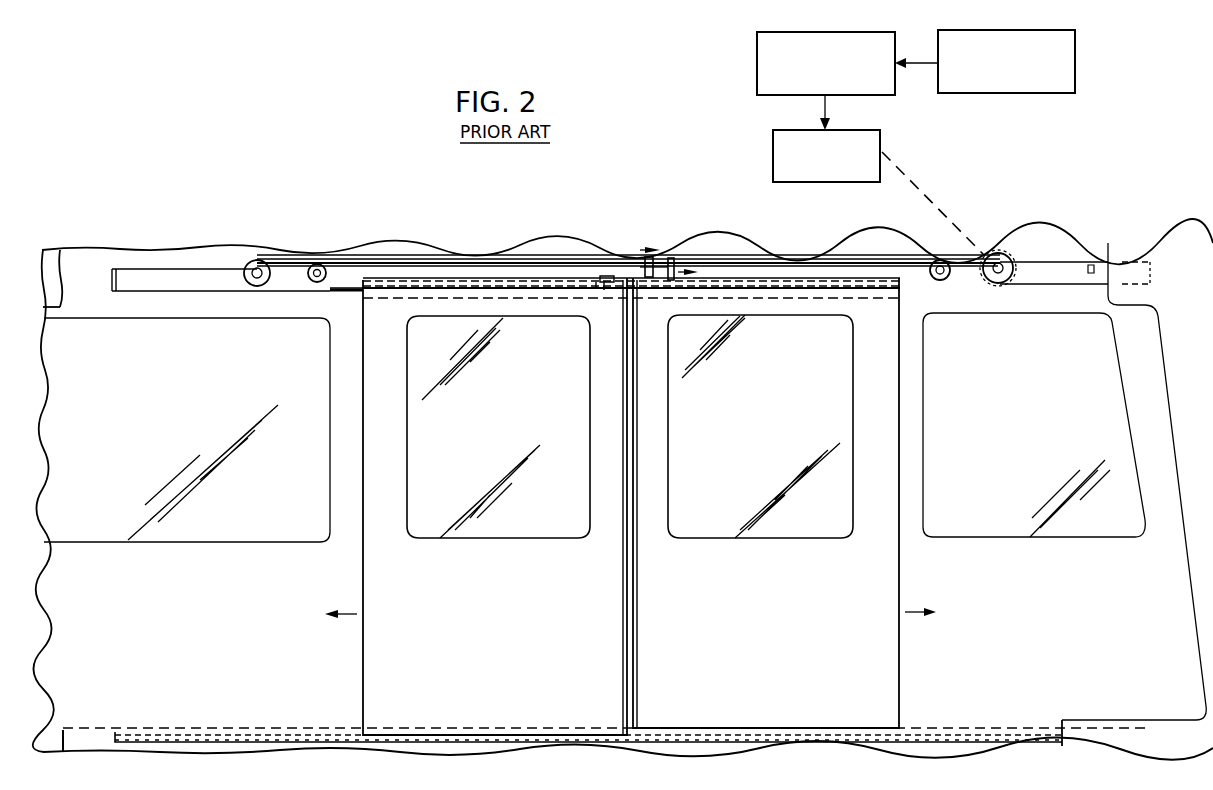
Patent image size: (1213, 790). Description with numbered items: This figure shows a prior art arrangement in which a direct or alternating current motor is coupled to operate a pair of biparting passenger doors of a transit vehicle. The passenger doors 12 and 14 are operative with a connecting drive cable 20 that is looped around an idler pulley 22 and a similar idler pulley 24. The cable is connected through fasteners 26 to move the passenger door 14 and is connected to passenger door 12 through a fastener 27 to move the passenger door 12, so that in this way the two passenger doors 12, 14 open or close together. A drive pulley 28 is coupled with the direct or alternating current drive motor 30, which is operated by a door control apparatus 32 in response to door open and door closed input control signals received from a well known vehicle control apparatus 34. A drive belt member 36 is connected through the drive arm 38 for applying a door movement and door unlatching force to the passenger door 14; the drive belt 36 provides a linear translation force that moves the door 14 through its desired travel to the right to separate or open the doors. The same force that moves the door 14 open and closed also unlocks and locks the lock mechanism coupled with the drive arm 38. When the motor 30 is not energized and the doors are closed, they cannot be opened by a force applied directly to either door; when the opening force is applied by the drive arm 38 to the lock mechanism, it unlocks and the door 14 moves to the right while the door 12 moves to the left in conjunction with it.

The passenger door 12 is at (617, 653).
The passenger door 14 is at (893, 652).
The connecting drive cable 20 is at (805, 262).
The idler pulley 22 is at (946, 280).
The idler pulley 24 is at (308, 283).
The fasteners 26 is at (672, 282).
The fastener 27 is at (597, 288).
The drive pulley 28 is at (1012, 278).
The drive motor 30 is at (773, 145).
The door control apparatus 32 is at (757, 50).
The vehicle control apparatus 34 is at (1075, 54).
The drive belt member 36 is at (891, 256).
The drive arm 38 is at (656, 262).